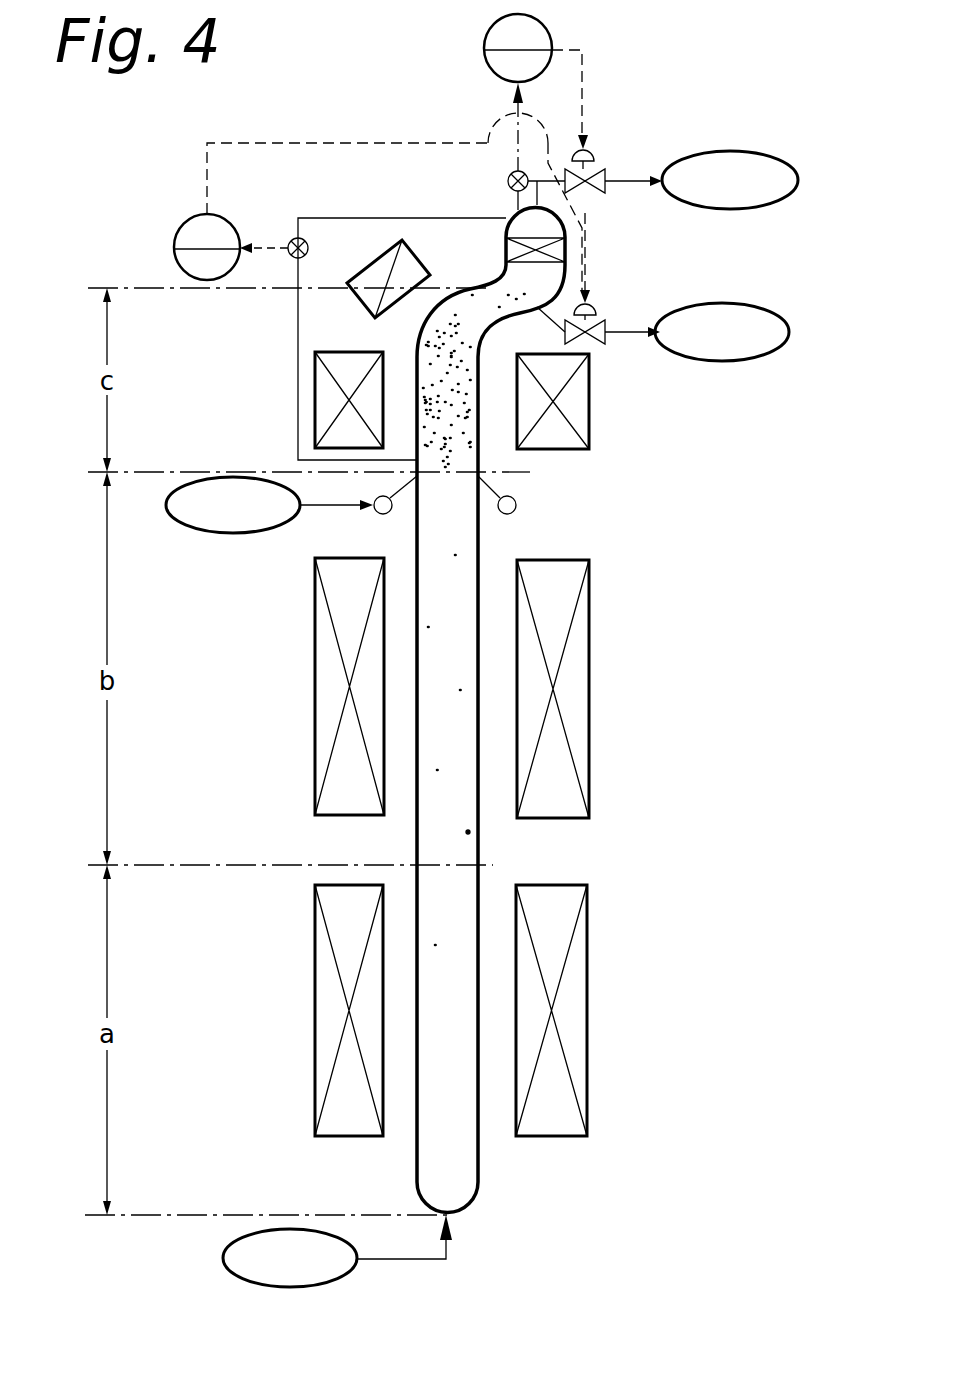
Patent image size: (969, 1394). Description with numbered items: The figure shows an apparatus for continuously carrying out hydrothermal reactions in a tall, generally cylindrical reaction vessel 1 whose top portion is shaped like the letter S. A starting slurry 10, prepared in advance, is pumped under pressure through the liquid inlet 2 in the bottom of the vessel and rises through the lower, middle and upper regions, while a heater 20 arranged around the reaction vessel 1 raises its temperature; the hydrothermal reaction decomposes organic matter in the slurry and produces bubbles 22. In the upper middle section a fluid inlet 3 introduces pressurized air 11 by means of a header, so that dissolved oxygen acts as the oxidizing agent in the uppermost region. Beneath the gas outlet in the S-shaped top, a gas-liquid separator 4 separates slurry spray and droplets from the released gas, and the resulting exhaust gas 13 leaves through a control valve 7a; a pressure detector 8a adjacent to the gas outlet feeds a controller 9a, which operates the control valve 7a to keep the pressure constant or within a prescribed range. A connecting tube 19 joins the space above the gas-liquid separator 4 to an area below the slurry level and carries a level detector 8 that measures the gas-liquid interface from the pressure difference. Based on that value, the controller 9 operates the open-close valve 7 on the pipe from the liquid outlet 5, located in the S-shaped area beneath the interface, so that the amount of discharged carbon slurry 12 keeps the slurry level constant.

The reaction vessel 1 is at (480, 1168).
The liquid inlet 2 is at (449, 1218).
The fluid inlet 3 is at (482, 463).
The gas-liquid separator 4 is at (505, 250).
The liquid outlet 5 is at (537, 309).
The open-close valve 7 is at (594, 305).
The control valve 7a is at (593, 152).
The level detector 8 is at (291, 238).
The pressure detector 8a is at (506, 181).
The controller 9 is at (190, 217).
The controller 9a is at (550, 35).
The starting slurry 10 is at (222, 1259).
The pressurized air 11 is at (240, 537).
The discharged carbon slurry 12 is at (737, 362).
The exhaust gas 13 is at (737, 210).
The connecting tube 19 is at (298, 375).
The heater 20 is at (590, 434).
The bubbles 22 is at (470, 832).